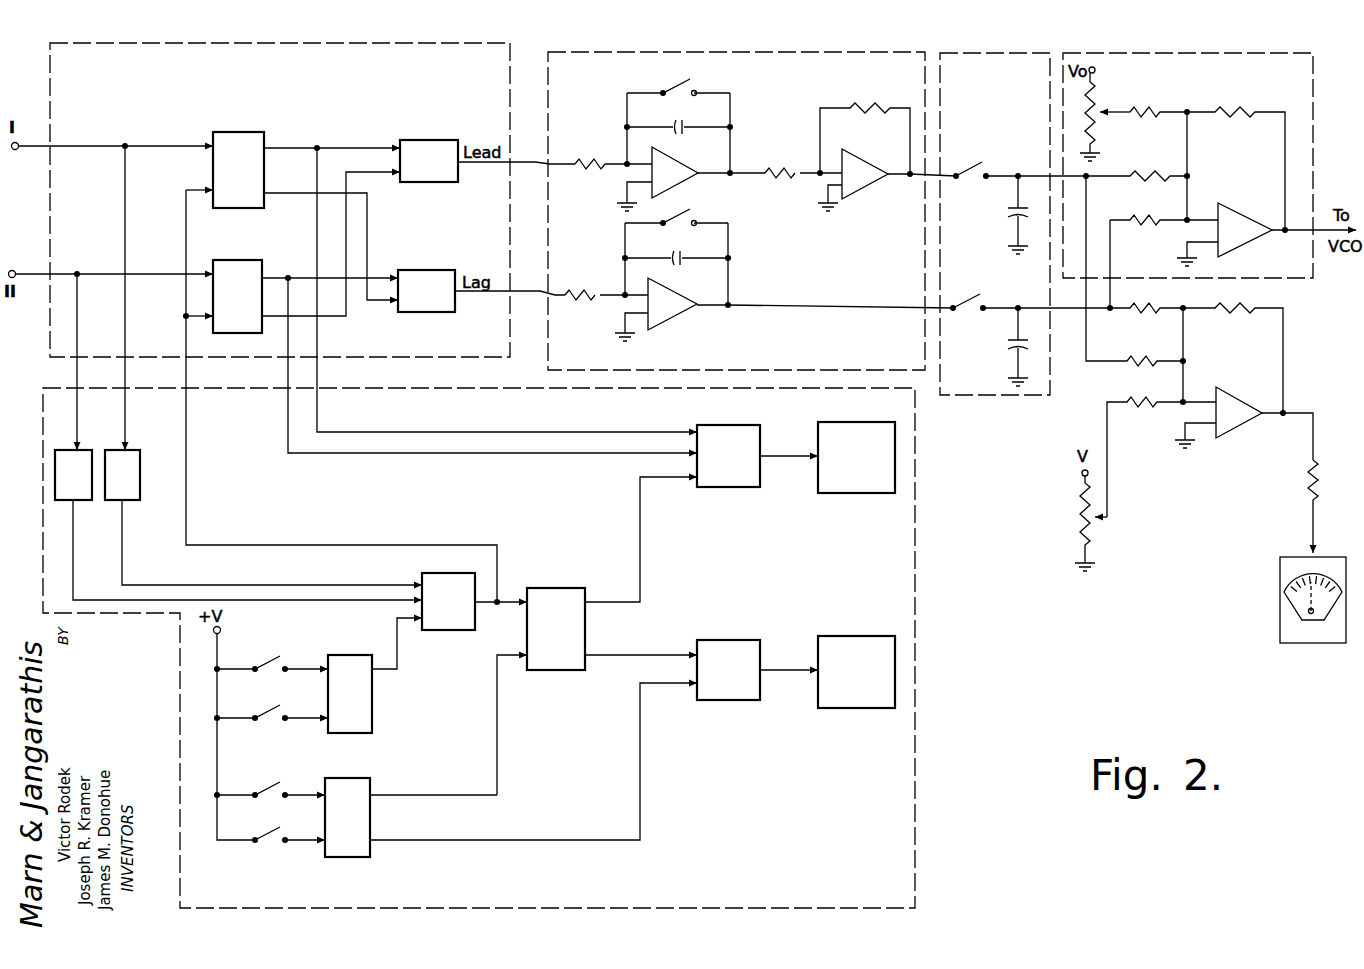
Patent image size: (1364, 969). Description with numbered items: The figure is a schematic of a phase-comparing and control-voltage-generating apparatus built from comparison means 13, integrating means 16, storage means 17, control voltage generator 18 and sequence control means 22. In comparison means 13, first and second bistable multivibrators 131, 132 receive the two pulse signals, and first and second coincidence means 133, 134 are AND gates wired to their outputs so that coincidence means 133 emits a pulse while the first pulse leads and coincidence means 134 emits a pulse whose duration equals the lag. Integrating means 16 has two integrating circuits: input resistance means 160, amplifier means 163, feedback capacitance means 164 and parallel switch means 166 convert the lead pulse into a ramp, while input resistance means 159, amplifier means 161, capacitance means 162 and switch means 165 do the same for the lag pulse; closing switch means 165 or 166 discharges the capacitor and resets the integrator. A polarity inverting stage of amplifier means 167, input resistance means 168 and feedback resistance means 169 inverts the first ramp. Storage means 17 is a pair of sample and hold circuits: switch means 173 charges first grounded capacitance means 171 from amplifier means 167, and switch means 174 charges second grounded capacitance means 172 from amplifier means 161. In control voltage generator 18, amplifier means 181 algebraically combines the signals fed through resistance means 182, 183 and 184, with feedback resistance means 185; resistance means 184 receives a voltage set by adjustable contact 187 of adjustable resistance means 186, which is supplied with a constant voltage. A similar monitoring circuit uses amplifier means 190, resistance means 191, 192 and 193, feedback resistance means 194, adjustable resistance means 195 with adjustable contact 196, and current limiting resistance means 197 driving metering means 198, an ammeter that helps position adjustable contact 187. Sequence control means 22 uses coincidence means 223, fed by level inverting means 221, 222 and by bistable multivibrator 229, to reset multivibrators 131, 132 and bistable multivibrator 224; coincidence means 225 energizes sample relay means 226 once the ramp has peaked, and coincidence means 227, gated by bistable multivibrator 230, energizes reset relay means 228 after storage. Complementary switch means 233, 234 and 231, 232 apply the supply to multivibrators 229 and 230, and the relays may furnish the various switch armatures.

The comparison means 13 is at (280, 200).
The integrating means 16 is at (736, 211).
The storage means 17 is at (995, 224).
The control voltage generator 18 is at (1188, 165).
The sequence control means 22 is at (479, 648).
The first bistable multivibrator 131 is at (237, 132).
The second bistable multivibrator 132 is at (237, 260).
The first coincidence means 133 is at (428, 140).
The second coincidence means 134 is at (426, 270).
The input resistance means 159 is at (583, 300).
The input resistance means 160 is at (590, 170).
The amplifier means 161 is at (680, 328).
The capacitance means 162 is at (684, 255).
The amplifier means 163 is at (685, 185).
The capacitance means 164 is at (688, 133).
The switch means 165 is at (680, 215).
The switch means 166 is at (680, 88).
The amplifier means 167 is at (860, 190).
The resistance means 168 is at (782, 180).
The resistance means 169 is at (870, 103).
The first grounded capacitance means 171 is at (1012, 218).
The second grounded capacitance means 172 is at (1012, 352).
The switch means 173 is at (975, 166).
The switch means 174 is at (973, 300).
The amplifier means 181 is at (1240, 250).
The resistance means 182 is at (1145, 225).
The resistance means 183 is at (1150, 181).
The resistance means 184 is at (1148, 122).
The resistance means 185 is at (1235, 122).
The adjustable resistance means 186 is at (1096, 102).
The adjustable contact 187 is at (1096, 117).
The amplifier means 190 is at (1233, 432).
The resistance means 191 is at (1138, 308).
The resistance means 192 is at (1135, 356).
The resistance means 193 is at (1140, 410).
The resistance means 194 is at (1220, 308).
The adjustable resistance means 195 is at (1075, 538).
The adjustable contact 196 is at (1098, 525).
The current limiting resistance means 197 is at (1308, 484).
The metering means 198 is at (1280, 603).
The level inverting means 221 is at (130, 500).
The level inverting means 222 is at (80, 500).
The coincidence means 223 is at (445, 573).
The bistable multivibrator 224 is at (560, 588).
The coincidence means 225 is at (728, 487).
The sample relay means 226 is at (852, 493).
The coincidence means 227 is at (724, 700).
The reset relay means 228 is at (850, 708).
The bistable multivibrator 229 is at (350, 655).
The bistable multivibrator 230 is at (350, 778).
The switch means 231 is at (266, 834).
The switch means 232 is at (266, 788).
The switch means 233 is at (272, 712).
The switch means 234 is at (265, 660).